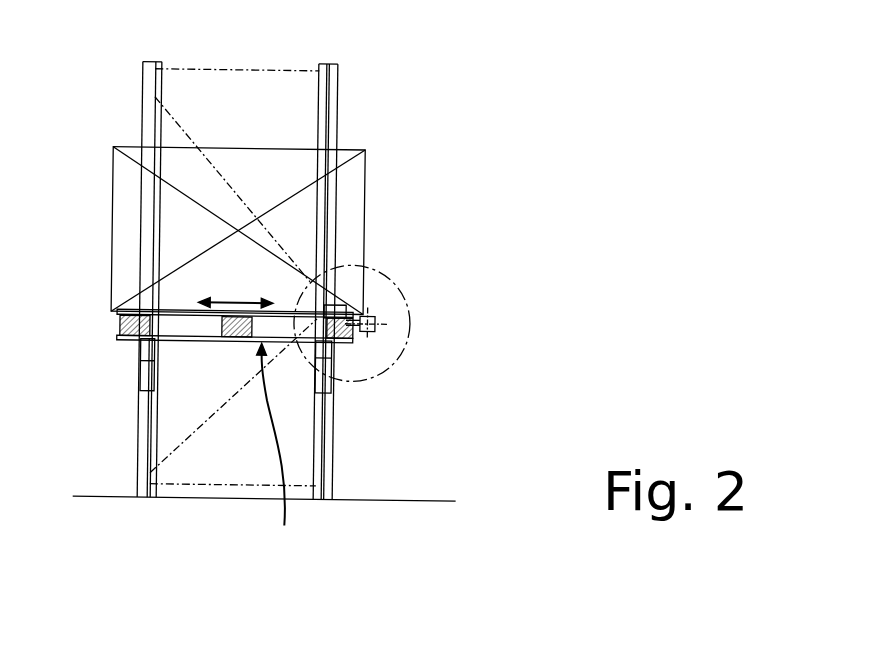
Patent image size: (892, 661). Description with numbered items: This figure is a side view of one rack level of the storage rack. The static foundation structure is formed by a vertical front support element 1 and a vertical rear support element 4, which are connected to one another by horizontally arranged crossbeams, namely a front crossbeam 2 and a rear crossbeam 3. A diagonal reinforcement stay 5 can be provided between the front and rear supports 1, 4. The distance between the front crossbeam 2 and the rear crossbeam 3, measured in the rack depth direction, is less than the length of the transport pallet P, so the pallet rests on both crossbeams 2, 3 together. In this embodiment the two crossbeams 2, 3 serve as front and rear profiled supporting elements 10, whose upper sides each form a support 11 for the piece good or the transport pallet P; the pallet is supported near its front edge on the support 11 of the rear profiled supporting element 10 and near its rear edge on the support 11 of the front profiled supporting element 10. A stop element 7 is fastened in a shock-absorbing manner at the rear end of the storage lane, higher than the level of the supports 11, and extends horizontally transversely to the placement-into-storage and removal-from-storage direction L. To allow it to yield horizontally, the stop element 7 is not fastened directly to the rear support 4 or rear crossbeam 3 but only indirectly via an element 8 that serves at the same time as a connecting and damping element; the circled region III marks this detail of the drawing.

The vertical front support element 1 is at (145, 435).
The front crossbeam 2 is at (143, 352).
The rear crossbeam 3 is at (330, 353).
The vertical rear support element 4 is at (327, 442).
The diagonal reinforcement stay 5 is at (185, 127).
The stop element 7 is at (378, 316).
The connecting and damping element 8 is at (345, 303).
The profiled supporting element 10 is at (235, 297).
The support 11 is at (135, 323).
The placement-into-storage and removal-from-storage direction L is at (225, 302).
The transport pallet P is at (273, 448).
The detail III is at (400, 353).